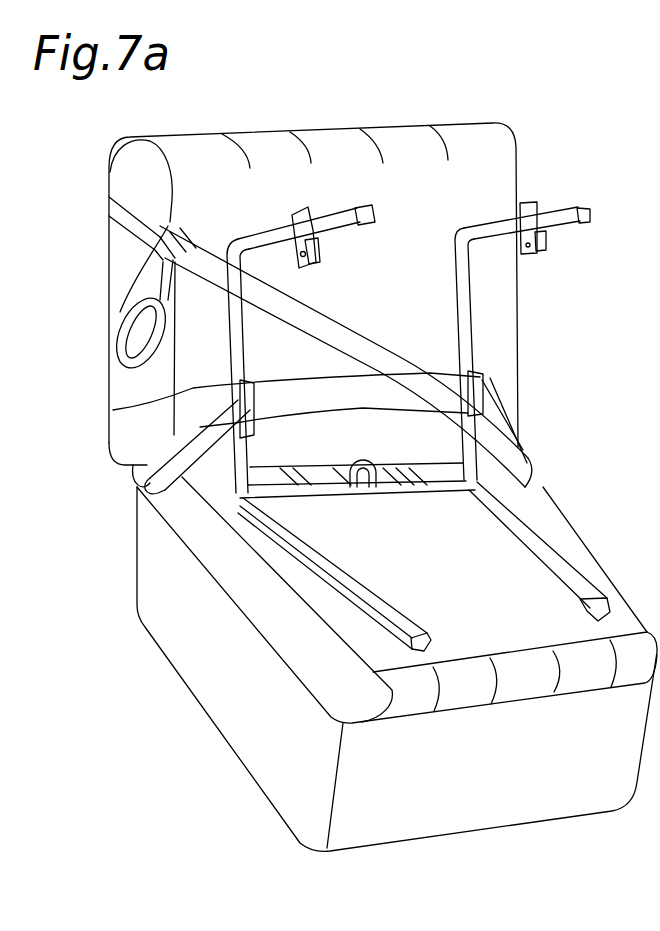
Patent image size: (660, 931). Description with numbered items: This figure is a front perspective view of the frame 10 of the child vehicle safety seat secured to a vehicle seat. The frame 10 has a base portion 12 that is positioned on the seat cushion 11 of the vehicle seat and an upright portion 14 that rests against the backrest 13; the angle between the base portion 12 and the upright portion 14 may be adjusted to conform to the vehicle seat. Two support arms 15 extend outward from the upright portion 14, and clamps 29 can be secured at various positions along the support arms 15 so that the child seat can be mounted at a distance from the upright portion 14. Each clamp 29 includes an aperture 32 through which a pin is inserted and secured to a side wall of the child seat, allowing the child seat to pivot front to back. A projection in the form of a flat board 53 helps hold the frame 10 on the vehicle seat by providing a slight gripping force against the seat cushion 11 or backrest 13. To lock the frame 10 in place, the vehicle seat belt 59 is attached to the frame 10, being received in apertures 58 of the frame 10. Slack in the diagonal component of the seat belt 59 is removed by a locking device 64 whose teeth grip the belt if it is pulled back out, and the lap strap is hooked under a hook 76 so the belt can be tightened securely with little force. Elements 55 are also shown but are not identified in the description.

The frame 10 is at (437, 423).
The seat cushion 11 is at (494, 609).
The base portion 12 is at (523, 543).
The backrest 13 is at (408, 257).
The upright portion 14 is at (248, 353).
The support arm 15 is at (282, 223).
The clamps 29 is at (313, 230).
The apertures 32 is at (307, 263).
The flat board 53 is at (303, 476).
The end stops 55 is at (411, 651).
The apertures 58 is at (190, 388).
The vehicle seat belt 59 is at (213, 250).
The locking device 64 is at (181, 282).
The hook 76 is at (366, 461).